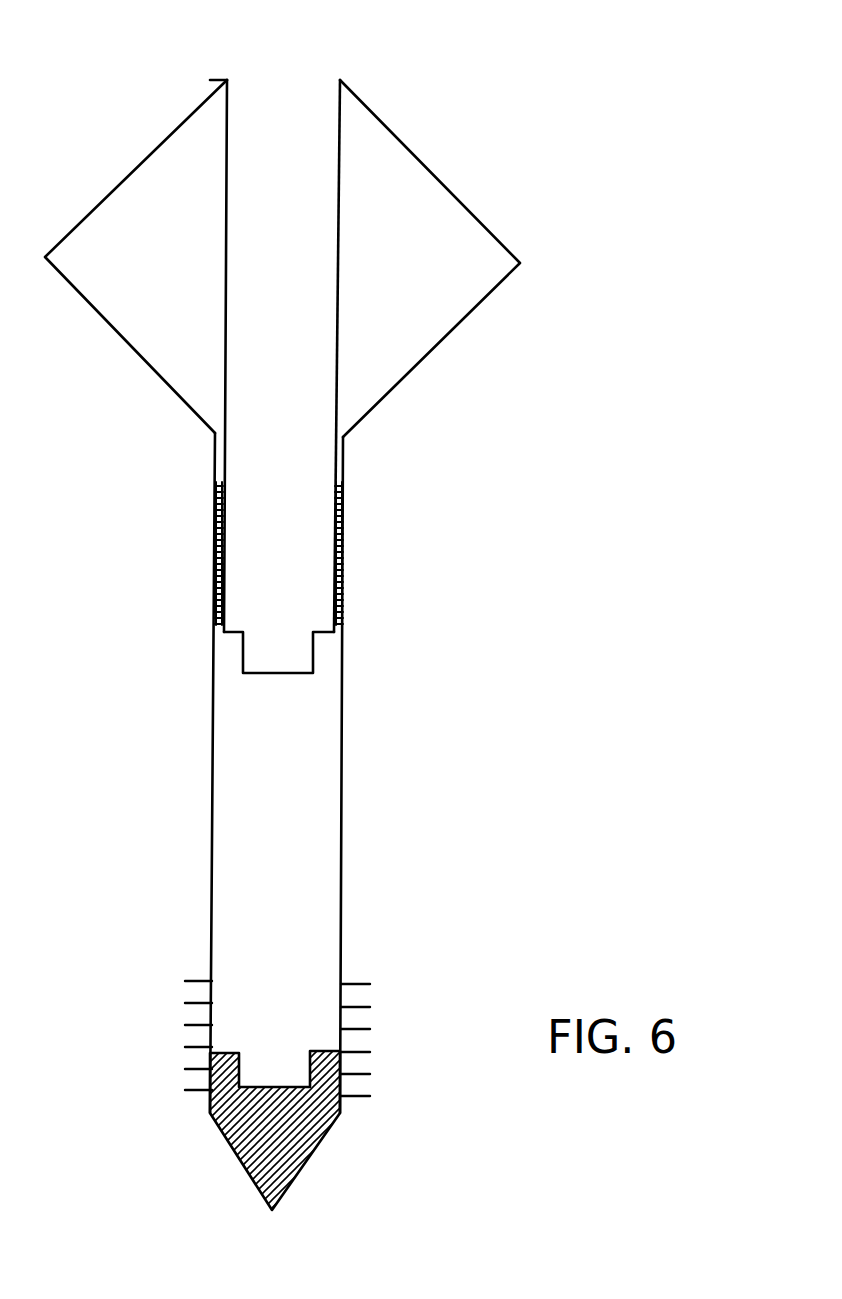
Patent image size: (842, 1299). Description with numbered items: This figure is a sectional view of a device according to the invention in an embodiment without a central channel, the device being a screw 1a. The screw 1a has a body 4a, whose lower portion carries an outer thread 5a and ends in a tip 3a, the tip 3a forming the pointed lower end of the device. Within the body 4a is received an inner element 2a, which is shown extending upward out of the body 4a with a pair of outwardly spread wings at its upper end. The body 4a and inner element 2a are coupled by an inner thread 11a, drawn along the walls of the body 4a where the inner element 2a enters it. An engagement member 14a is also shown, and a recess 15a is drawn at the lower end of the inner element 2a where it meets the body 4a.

The screw 1a is at (206, 739).
The inner element 2a is at (302, 392).
The tip 3a is at (222, 1138).
The body 4a is at (343, 755).
The outer thread 5a is at (358, 985).
The inner thread 11a is at (334, 563).
The engagement member 14a is at (348, 92).
The recess 15a is at (267, 645).